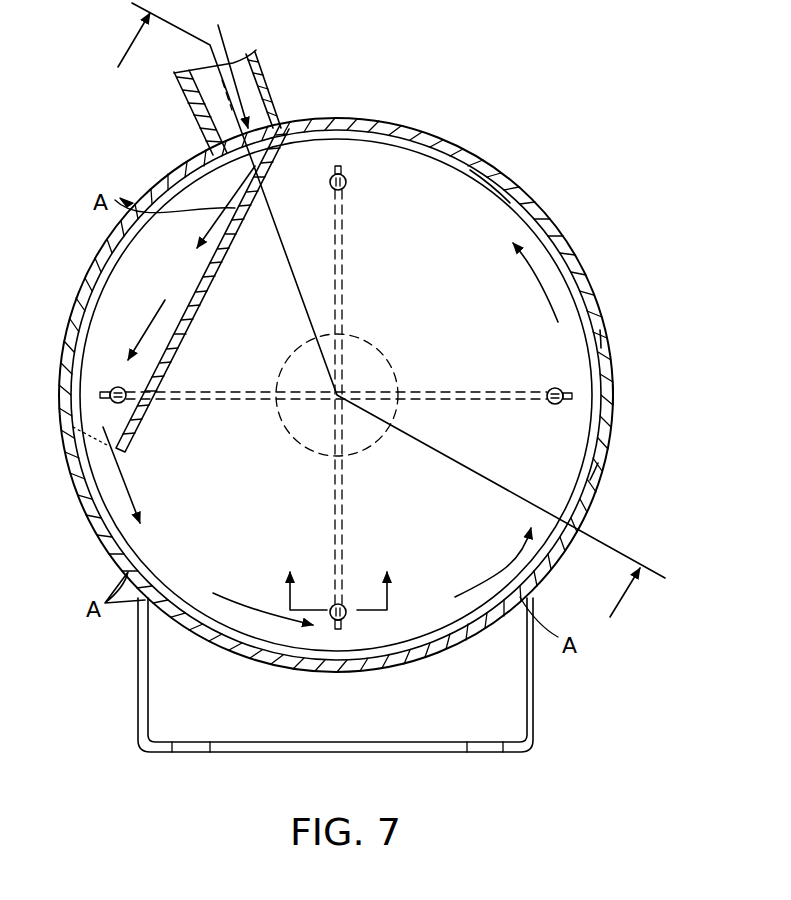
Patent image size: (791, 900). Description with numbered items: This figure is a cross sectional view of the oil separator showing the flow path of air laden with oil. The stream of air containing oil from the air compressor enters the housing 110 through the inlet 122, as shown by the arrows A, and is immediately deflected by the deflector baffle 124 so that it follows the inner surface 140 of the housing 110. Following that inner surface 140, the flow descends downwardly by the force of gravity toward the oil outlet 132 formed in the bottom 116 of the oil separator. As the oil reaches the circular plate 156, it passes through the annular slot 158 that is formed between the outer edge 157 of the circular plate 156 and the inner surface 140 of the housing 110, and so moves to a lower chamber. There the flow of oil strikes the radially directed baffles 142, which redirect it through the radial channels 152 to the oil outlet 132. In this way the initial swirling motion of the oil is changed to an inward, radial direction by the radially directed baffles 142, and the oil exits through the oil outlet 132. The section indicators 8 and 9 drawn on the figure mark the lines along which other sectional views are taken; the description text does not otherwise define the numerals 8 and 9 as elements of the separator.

The housing 110 is at (590, 277).
The bottom 116 is at (584, 427).
The inlet 122 is at (272, 104).
The deflector baffle 124 is at (200, 304).
The oil outlet 132 is at (397, 343).
The inner surface 140 is at (510, 203).
The radially directed baffles 142 is at (344, 270).
The radial channels 152 is at (330, 395).
The circular plate 156 is at (601, 347).
The outer edge 157 is at (598, 465).
The annular slot 158 is at (601, 396).
The section line 8- 8 is at (336, 584).
The section line 9- 9 is at (381, 320).